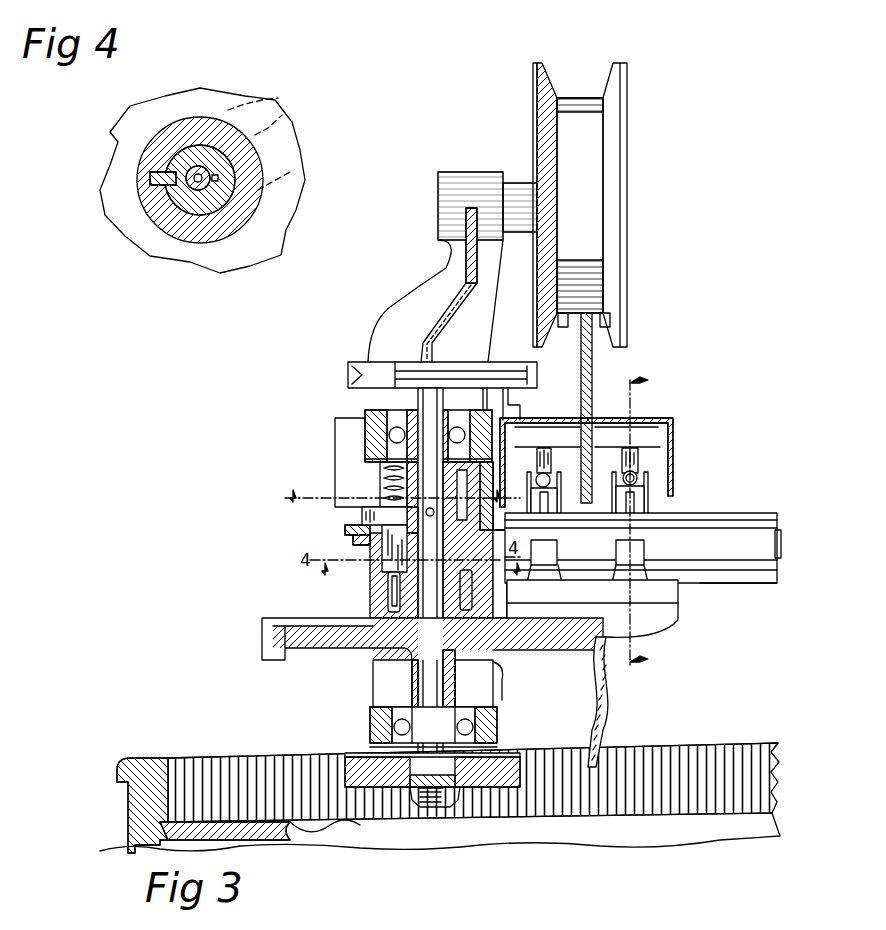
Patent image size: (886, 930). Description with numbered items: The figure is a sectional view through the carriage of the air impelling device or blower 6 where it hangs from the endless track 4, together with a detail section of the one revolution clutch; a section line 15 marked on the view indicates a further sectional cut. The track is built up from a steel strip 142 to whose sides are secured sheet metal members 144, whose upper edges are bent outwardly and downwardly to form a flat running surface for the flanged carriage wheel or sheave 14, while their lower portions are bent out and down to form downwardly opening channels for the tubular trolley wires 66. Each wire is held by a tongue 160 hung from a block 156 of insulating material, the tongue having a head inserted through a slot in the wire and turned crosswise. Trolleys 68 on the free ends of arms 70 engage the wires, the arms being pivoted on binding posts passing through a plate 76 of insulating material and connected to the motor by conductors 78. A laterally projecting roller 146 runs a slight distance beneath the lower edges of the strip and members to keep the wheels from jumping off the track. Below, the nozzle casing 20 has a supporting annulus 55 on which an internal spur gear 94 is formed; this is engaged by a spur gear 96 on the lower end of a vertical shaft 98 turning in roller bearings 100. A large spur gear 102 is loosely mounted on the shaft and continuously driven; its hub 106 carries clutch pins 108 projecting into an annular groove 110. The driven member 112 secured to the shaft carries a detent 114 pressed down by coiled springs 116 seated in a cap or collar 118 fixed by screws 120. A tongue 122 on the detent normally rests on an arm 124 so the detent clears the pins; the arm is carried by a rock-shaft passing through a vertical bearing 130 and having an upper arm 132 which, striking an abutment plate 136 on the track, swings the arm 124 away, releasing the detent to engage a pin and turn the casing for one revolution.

In FIG. 3, the endless track 4 is at (600, 360).
In FIG. 3, the air impelling device or blower 6 is at (394, 490).
In FIG. 3, the flanged wheel or sheave 14 is at (595, 190).
In FIG. 3, the section line 15 is at (653, 520).
In FIG. 3, the sheet metal casing 20 is at (117, 838).
In FIG. 3, the supporting annulus 55 is at (165, 758).
In FIG. 3, the trolley wires 66 is at (637, 478).
In FIG. 3, the trolleys 68 is at (640, 500).
In FIG. 3, the arms 70 is at (648, 545).
In FIG. 3, the plate of insulating material 76 is at (655, 592).
In FIG. 3, the conductors 78 is at (608, 708).
In FIG. 3, the internal spur gear 94 is at (200, 772).
In FIG. 3, the spur gear 96 is at (340, 757).
In FIG. 4, the vertical shaft 98 is at (198, 190).
In FIG. 3, the vertical shaft 98 is at (418, 688).
In FIG. 3, the roller bearings 100 is at (475, 730).
In FIG. 4, the large spur gear 102 is at (300, 215).
In FIG. 3, the large spur gear 102 is at (262, 637).
In FIG. 3, the hub 106 is at (370, 605).
In FIG. 4, the clutch pins 108 is at (278, 98).
In FIG. 3, the clutch pins 108 is at (392, 590).
In FIG. 4, the annular groove 110 is at (290, 172).
In FIG. 3, the annular groove 110 is at (388, 580).
In FIG. 4, the driven member 112 is at (190, 200).
In FIG. 3, the driven member 112 is at (354, 540).
In FIG. 4, the detent 114 is at (150, 165).
In FIG. 3, the detent 114 is at (362, 515).
In FIG. 3, the coiled springs 116 is at (382, 480).
In FIG. 3, the cap or collar 118 is at (372, 452).
In FIG. 3, the screws 120 is at (470, 500).
In FIG. 3, the tongue 122 is at (382, 515).
In FIG. 3, the arm 124 is at (345, 530).
In FIG. 3, the vertical bearing 130 is at (338, 425).
In FIG. 3, the arm 132 is at (440, 355).
In FIG. 3, the abutment plate 136 is at (520, 412).
In FIG. 3, the steel strip 142 is at (580, 490).
In FIG. 3, the sheet metal members 144 is at (675, 470).
In FIG. 3, the roller 146 is at (735, 575).
In FIG. 3, the block of insulating material 156 is at (640, 430).
In FIG. 3, the tongue 160 is at (640, 455).